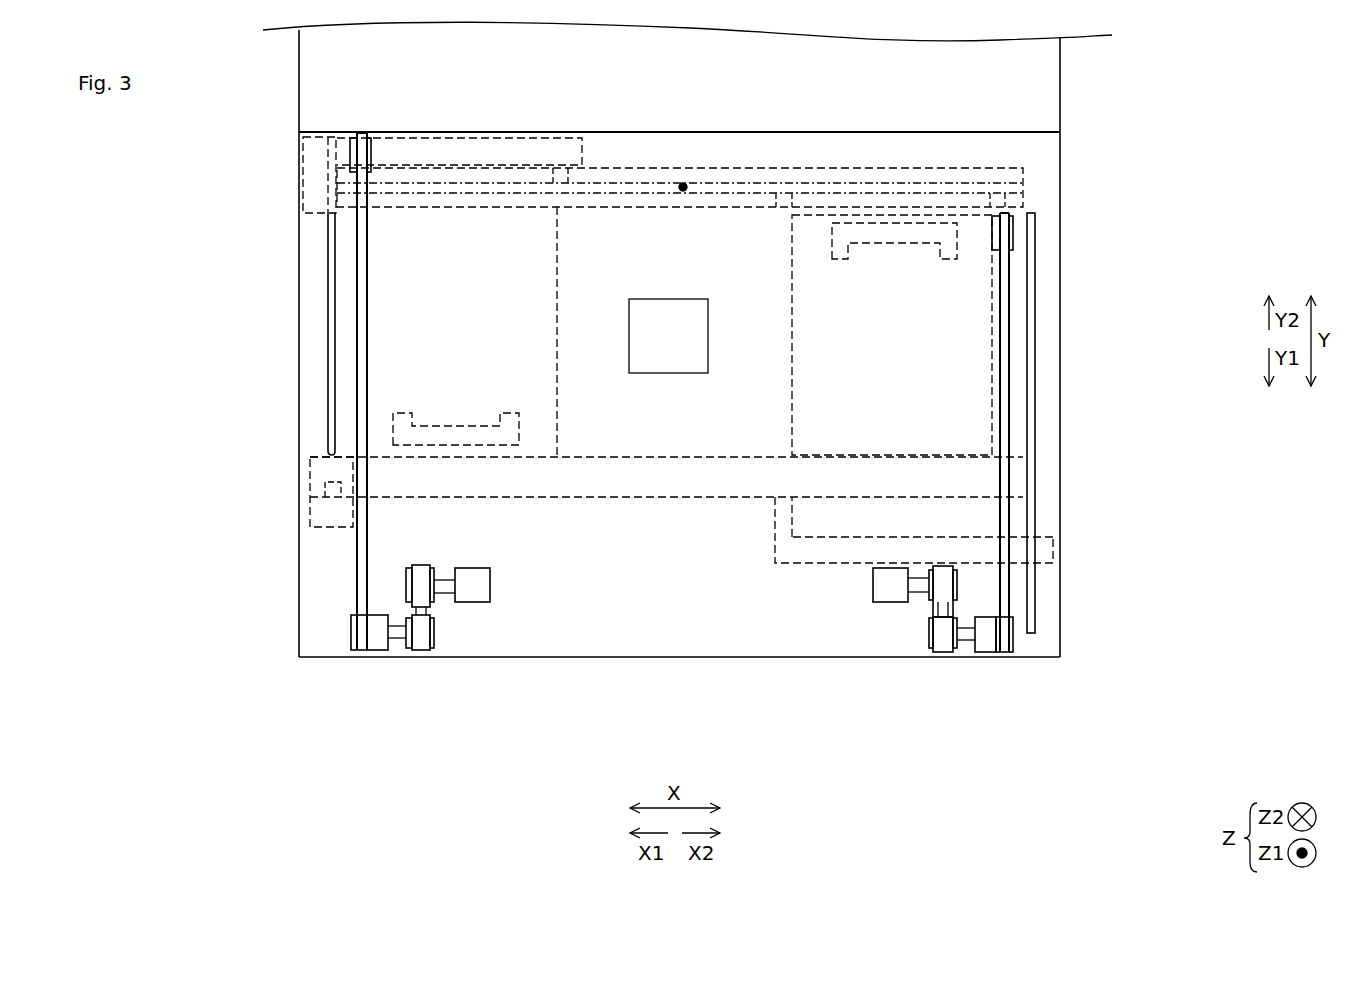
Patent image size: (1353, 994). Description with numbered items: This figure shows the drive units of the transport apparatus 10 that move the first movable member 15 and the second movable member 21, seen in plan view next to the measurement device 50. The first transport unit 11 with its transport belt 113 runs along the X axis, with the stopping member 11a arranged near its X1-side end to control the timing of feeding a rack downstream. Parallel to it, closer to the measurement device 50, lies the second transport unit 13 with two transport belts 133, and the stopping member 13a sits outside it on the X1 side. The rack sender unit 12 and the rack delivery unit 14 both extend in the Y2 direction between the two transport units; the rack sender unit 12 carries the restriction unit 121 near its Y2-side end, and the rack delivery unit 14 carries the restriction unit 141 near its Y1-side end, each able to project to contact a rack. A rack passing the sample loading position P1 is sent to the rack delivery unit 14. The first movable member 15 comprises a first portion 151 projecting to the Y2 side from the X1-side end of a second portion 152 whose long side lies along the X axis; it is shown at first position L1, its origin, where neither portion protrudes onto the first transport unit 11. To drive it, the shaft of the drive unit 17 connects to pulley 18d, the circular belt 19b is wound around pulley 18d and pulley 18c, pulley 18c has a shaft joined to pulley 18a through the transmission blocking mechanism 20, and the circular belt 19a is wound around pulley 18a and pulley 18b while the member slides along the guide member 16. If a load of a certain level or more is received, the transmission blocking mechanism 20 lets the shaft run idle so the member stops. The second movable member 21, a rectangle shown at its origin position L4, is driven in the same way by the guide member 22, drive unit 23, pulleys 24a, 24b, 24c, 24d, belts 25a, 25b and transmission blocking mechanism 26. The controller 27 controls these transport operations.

The transport apparatus 10 is at (698, 660).
The measurement device 50 is at (1048, 103).
The first transport unit 11 is at (627, 519).
The stopping member 11a is at (320, 512).
The transport belt 113 is at (677, 478).
The rack sender unit 12 is at (862, 335).
The restriction unit 121 is at (835, 240).
The second transport unit 13 is at (745, 201).
The stopping member 13a is at (310, 182).
The transport belts 133 is at (720, 178).
The rack delivery unit 14 is at (509, 332).
The restriction unit 141 is at (510, 437).
The first movable member 15 is at (938, 564).
The first portion 151 is at (778, 514).
The second portion 152 is at (972, 545).
The guide member 16 is at (1031, 395).
The drive unit 17 is at (890, 590).
The pulley 18a is at (1011, 640).
The pulley 18b is at (994, 234).
The pulley 18c is at (931, 640).
The pulley 18d is at (932, 605).
The belt 19a is at (1003, 390).
The belt 19b is at (943, 652).
The transmission blocking mechanism 20 is at (983, 652).
The second movable member 21 is at (486, 123).
The guide member 22 is at (332, 352).
The drive unit 23 is at (470, 585).
The pulley 24a is at (350, 633).
The pulley 24b is at (372, 157).
The pulley 24c is at (434, 632).
The pulley 24d is at (434, 600).
The belt 25a is at (363, 352).
The belt 25b is at (423, 645).
The transmission blocking mechanism 26 is at (378, 640).
The controller 27 is at (671, 340).
The sample loading position P1 is at (682, 194).
The first position L1 is at (1057, 551).
The position L4 is at (591, 150).